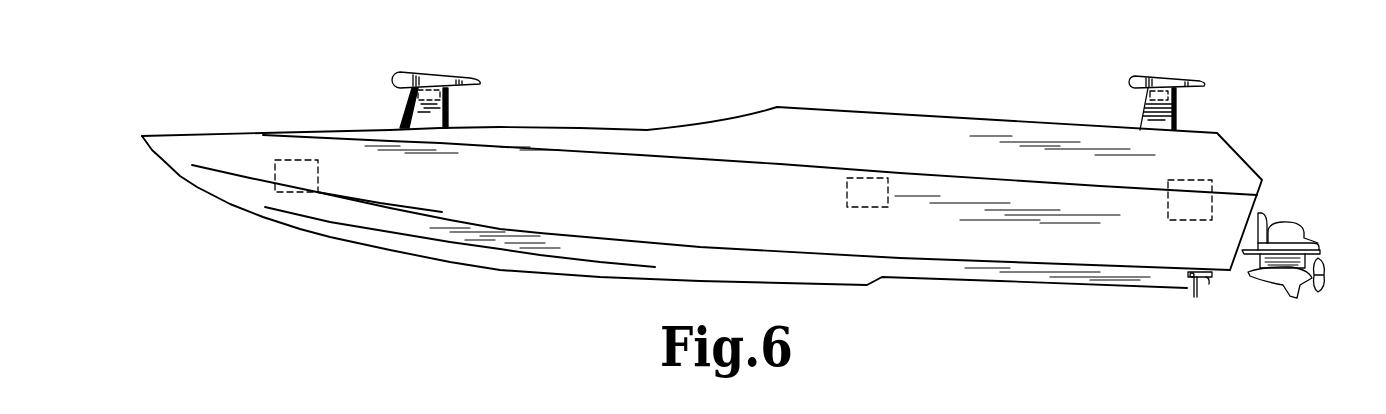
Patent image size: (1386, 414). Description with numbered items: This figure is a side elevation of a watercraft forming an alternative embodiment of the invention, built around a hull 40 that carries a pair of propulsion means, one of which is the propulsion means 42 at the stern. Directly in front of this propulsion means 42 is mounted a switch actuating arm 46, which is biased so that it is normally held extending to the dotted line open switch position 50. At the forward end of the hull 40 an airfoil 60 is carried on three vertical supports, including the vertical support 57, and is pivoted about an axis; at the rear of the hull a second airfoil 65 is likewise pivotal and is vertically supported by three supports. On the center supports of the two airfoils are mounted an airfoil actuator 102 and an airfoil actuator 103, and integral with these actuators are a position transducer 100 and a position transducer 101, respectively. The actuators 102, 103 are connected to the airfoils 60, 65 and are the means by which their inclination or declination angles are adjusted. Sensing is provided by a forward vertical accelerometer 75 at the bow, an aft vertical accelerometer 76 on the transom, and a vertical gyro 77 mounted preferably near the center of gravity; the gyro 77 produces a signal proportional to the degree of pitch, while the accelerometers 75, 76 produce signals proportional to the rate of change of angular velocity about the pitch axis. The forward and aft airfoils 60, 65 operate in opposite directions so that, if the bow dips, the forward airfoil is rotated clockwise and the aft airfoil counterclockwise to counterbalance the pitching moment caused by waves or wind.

The hull 40 is at (786, 103).
The propulsion means 42 is at (1325, 254).
The switch actuating arm 46 is at (1207, 278).
The dotted line open switch position 50 is at (1190, 292).
The vertical support 57 is at (442, 121).
The airfoil 60 is at (425, 72).
The second airfoil 65 is at (1145, 76).
The forward vertical accelerometer 75 is at (300, 168).
The aft vertical accelerometer 76 is at (1213, 183).
The vertical gyro 77 is at (872, 180).
The position transducer 100 is at (457, 99).
The position transducer 101 is at (1210, 96).
The airfoil actuator 102 is at (483, 93).
The airfoil actuator 103 is at (1177, 103).